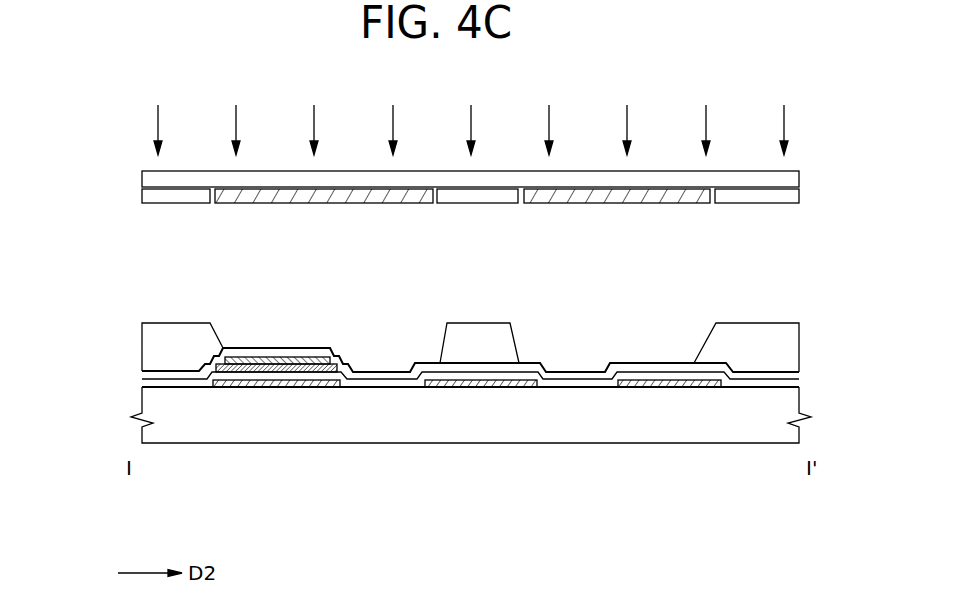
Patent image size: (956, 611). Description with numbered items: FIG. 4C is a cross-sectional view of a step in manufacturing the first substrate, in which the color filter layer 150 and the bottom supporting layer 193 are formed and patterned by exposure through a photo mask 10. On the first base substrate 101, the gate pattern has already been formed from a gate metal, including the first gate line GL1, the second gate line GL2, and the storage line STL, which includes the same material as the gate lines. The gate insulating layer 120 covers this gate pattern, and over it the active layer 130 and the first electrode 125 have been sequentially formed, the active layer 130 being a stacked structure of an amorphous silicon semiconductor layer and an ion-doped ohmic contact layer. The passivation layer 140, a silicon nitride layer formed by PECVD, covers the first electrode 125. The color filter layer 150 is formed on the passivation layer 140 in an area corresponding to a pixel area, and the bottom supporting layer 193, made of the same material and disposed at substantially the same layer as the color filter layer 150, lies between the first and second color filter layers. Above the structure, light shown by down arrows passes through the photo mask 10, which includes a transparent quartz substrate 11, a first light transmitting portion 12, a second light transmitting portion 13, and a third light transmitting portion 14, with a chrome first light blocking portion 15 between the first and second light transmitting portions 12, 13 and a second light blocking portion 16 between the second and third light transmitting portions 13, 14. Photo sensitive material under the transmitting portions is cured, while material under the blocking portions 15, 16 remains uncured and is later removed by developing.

The photo mask 10 is at (71, 160).
The transparent substrate 11 is at (148, 180).
The first light transmitting portion 12 is at (148, 195).
The second light transmitting portion 13 is at (450, 198).
The third light transmitting portion 14 is at (755, 197).
The first light blocking portion 15 is at (248, 198).
The second light blocking portion 16 is at (560, 198).
The first base substrate 101 is at (147, 432).
The gate insulating layer 120 is at (143, 386).
The first electrode 125 is at (297, 362).
The active layer 130 is at (228, 368).
The passivation layer 140 is at (147, 372).
The color filter layer 150 is at (147, 349).
The bottom supporting layer 193 is at (458, 342).
The storage line STL is at (272, 387).
The first gate line GL1 is at (503, 388).
The second gate line GL2 is at (673, 388).